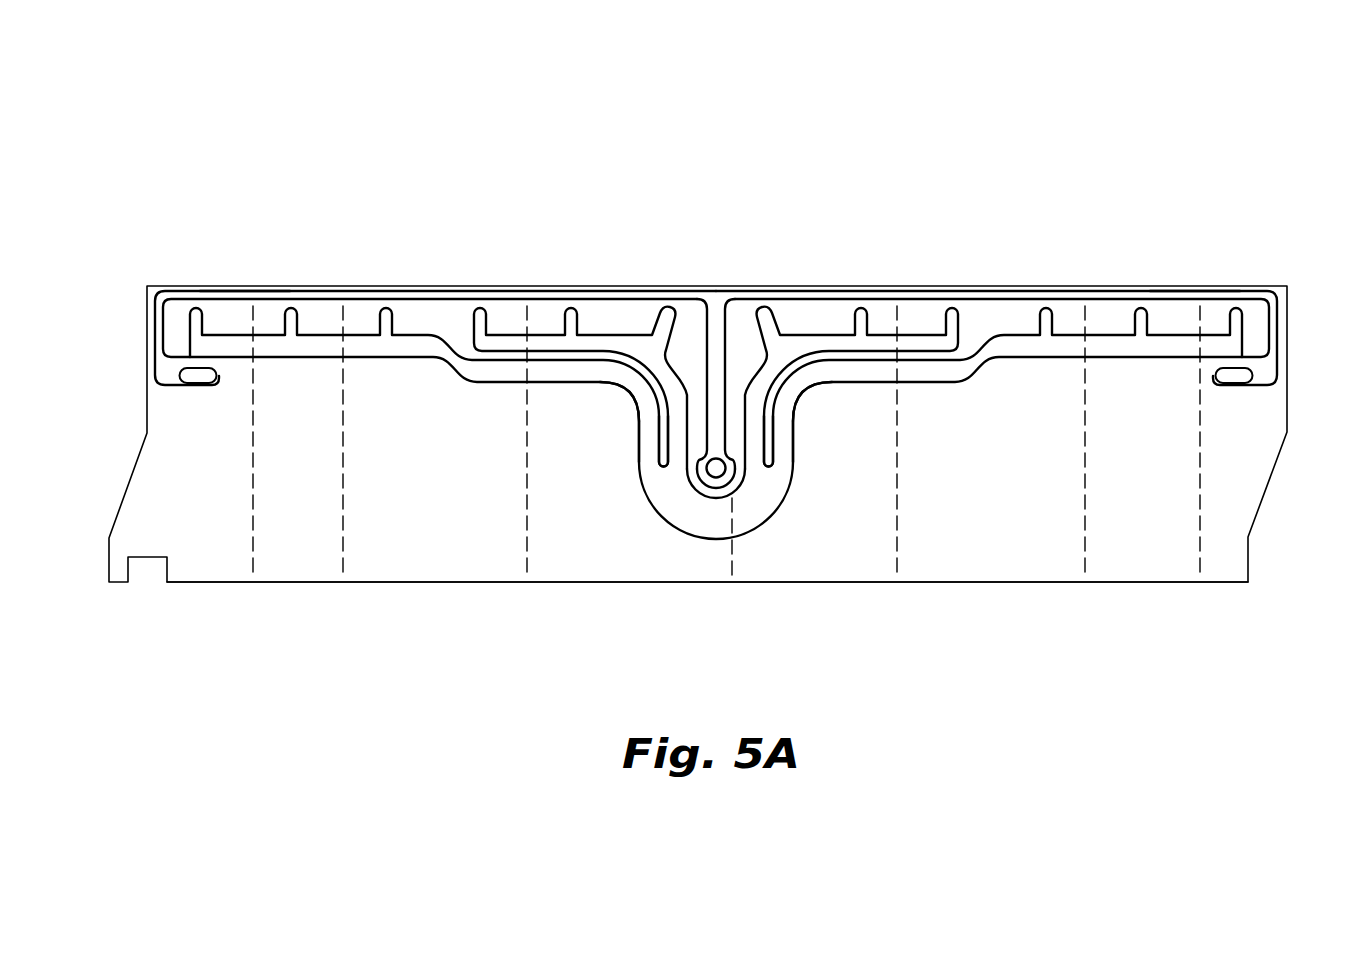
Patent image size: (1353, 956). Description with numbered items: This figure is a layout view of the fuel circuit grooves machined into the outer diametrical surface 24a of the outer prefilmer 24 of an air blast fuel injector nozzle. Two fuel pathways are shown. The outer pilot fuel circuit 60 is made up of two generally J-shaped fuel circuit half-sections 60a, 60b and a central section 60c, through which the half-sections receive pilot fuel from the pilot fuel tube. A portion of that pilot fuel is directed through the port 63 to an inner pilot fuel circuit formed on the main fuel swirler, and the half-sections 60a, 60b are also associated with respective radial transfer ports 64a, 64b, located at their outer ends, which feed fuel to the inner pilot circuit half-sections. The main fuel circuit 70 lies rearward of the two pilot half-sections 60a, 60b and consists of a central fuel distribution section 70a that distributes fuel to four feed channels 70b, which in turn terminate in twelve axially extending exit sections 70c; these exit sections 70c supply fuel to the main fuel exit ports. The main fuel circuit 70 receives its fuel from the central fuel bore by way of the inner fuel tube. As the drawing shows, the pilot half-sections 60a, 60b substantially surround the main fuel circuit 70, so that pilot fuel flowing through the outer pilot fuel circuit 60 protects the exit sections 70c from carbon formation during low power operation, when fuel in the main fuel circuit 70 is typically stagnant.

The outer prefilmer 24 is at (371, 161).
The outer diametrical surface 24a is at (1143, 541).
The outer pilot fuel circuit 60 is at (683, 288).
The fuel circuit half-section 60a is at (237, 291).
The fuel circuit half-section 60b is at (1193, 291).
The central section 60c is at (718, 357).
The port 63 is at (728, 471).
The radial transfer port 64a is at (184, 375).
The radial transfer port 64b is at (1239, 380).
The main fuel circuit 70 is at (668, 528).
The central fuel distribution section 70a is at (747, 509).
The feed channels 70b is at (680, 414).
The exit sections 70c is at (193, 306).